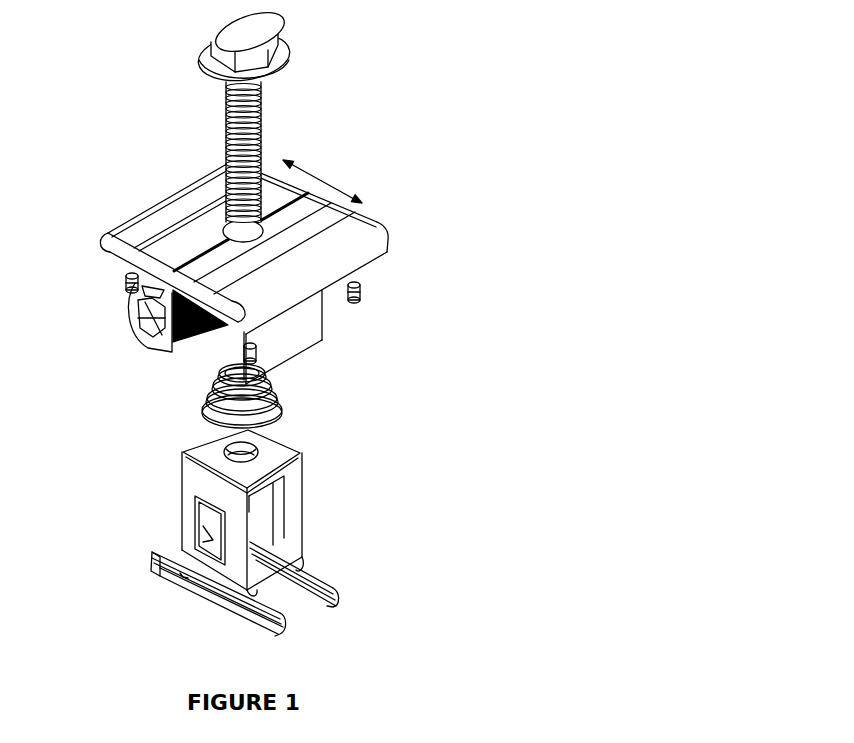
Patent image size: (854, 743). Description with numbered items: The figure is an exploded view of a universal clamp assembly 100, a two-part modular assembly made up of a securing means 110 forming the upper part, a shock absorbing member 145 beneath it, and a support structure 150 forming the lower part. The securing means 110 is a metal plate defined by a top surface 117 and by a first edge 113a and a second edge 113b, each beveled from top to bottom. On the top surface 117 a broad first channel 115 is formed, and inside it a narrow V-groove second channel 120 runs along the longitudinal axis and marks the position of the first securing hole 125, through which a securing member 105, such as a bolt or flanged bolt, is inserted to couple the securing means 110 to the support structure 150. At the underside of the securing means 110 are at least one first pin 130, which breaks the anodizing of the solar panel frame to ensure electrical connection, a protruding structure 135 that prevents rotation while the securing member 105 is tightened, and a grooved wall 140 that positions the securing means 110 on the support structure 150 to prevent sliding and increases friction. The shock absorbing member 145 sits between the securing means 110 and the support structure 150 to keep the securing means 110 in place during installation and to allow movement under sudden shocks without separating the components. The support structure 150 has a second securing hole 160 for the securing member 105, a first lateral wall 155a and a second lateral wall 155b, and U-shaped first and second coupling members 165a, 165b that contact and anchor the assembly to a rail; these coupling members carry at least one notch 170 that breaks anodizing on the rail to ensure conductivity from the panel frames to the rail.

The universal clamp assembly 100 is at (505, 101).
The securing member 105 is at (248, 117).
The securing means 110 is at (98, 246).
The first edge 113a is at (133, 235).
The second edge 113b is at (357, 243).
The first channel 115 is at (323, 182).
The top surface 117 is at (170, 248).
The second channel 120 is at (206, 199).
The first securing hole 125 is at (247, 225).
The first pin 130 is at (360, 290).
The protruding structure 135 is at (284, 350).
The grooved wall 140 is at (185, 347).
The shock absorbing member 145 is at (252, 390).
The support structure 150 is at (165, 453).
The first lateral wall 155a is at (203, 481).
The second lateral wall 155b is at (289, 510).
The second securing hole 160 is at (252, 448).
The first coupling member 165a is at (168, 563).
The second coupling member 165b is at (296, 565).
The notch 170 is at (233, 598).